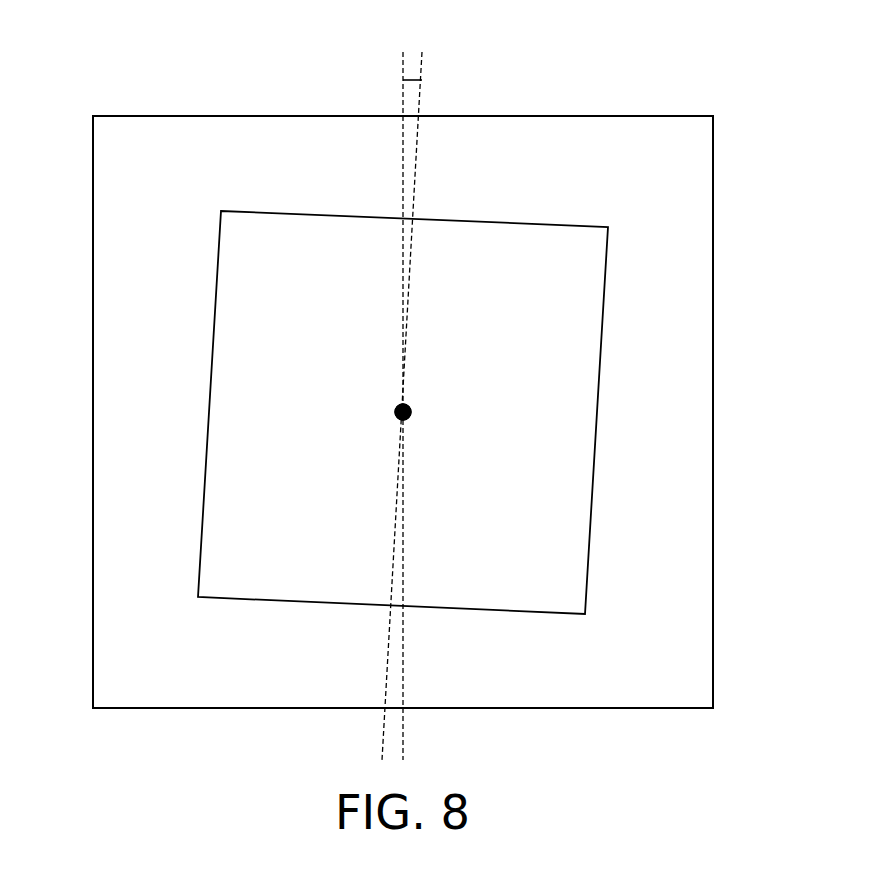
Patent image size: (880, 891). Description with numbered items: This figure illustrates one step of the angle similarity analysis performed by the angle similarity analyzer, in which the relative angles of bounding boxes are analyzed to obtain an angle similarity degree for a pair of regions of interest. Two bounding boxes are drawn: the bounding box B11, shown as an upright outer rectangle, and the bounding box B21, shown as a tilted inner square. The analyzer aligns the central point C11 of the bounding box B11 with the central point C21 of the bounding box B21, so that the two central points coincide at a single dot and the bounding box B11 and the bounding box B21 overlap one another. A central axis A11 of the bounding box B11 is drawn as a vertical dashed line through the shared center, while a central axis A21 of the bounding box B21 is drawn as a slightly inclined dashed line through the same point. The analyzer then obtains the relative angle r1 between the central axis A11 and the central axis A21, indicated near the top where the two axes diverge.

The central axis A11 is at (400, 100).
The central axis A21 is at (422, 100).
The relative angle r1 is at (415, 80).
The bounding box B11 is at (645, 116).
The bounding box B21 is at (598, 420).
The central point C11 is at (397, 407).
The central point C21 is at (397, 418).